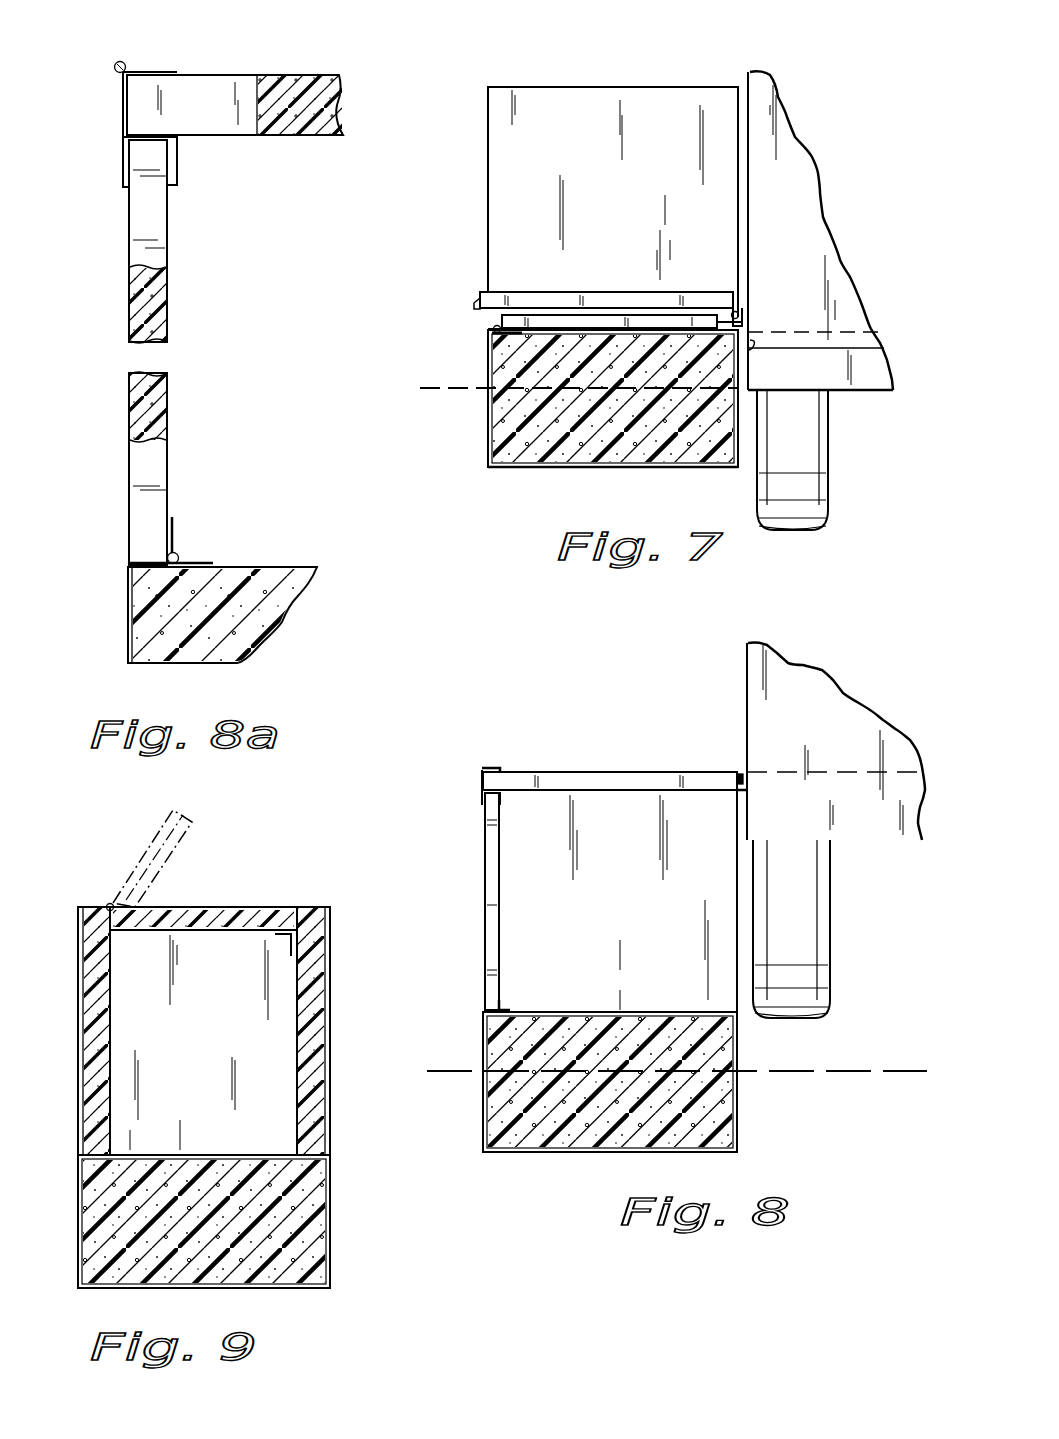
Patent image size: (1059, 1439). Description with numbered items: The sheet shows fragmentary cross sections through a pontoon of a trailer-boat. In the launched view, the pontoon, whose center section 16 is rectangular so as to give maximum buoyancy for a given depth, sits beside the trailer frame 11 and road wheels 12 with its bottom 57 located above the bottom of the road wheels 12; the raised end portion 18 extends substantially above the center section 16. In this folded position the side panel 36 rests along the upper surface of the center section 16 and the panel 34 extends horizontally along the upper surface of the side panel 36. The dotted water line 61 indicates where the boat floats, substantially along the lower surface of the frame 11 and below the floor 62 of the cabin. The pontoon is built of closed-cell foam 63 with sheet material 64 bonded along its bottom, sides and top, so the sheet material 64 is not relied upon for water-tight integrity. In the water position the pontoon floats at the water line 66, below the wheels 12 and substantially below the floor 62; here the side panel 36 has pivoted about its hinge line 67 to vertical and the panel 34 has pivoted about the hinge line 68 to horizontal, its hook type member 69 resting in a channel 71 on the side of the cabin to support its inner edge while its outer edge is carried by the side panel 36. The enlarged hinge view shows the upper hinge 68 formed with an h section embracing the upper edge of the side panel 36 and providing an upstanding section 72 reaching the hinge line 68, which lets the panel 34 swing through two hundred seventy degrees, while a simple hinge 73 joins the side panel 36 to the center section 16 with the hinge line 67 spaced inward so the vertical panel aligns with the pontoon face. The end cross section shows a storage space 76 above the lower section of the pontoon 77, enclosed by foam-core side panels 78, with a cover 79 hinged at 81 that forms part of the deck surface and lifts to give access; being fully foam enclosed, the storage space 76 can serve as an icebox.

In FIG. 7, the trailer frame 11 is at (860, 385).
In FIG. 7, the road wheels 12 is at (829, 467).
In FIG. 8, the road wheels 12 is at (830, 893).
In FIG. 8A, the center section 16 is at (272, 613).
In FIG. 7, the center section 16 is at (492, 405).
In FIG. 8, the center section 16 is at (490, 1110).
In FIG. 7, the rearward end portion 18 is at (608, 105).
In FIG. 8, the rearward end portion 18 is at (637, 910).
In FIG. 8A, the panel 34 is at (222, 97).
In FIG. 7, the panel 34 is at (590, 298).
In FIG. 8, the panel 34 is at (610, 778).
In FIG. 8A, the side panel 36 is at (156, 222).
In FIG. 7, the side panel 36 is at (558, 320).
In FIG. 8, the side panel 36 is at (490, 897).
In FIG. 7, the bottom 57 is at (668, 467).
In FIG. 7, the water line 61 is at (435, 388).
In FIG. 7, the floor 62 is at (852, 328).
In FIG. 8, the floor 62 is at (830, 775).
In FIG. 7, the closed-cell foam 63 is at (637, 430).
In FIG. 7, the sheet material 64 is at (740, 408).
In FIG. 8, the water line 66 is at (880, 1070).
In FIG. 8A, the hinge line 67 is at (180, 556).
In FIG. 7, the hinge line 67 is at (494, 326).
In FIG. 8, the hinge line 67 is at (505, 1008).
In FIG. 8A, the upper hinge 68 is at (122, 61).
In FIG. 7, the upper hinge 68 is at (740, 312).
In FIG. 8, the upper hinge 68 is at (482, 768).
In FIG. 7, the hook type member 69 is at (474, 302).
In FIG. 8, the hook type member 69 is at (748, 772).
In FIG. 7, the channel 71 is at (752, 344).
In FIG. 8, the channel 71 is at (738, 790).
In FIG. 8A, the upstanding section 72 is at (122, 104).
In FIG. 7, the upstanding section 72 is at (742, 322).
In FIG. 8, the upstanding section 72 is at (480, 785).
In FIG. 8A, the hinge 73 is at (176, 545).
In FIG. 7, the hinge 73 is at (500, 334).
In FIG. 9, the storage space 76 is at (220, 1045).
In FIG. 9, the lower section of the pontoon 77 is at (300, 1205).
In FIG. 9, the side panels 78 is at (83, 1013).
In FIG. 9, the cover 79 is at (177, 848).
In FIG. 9, the hinge 81 is at (108, 903).